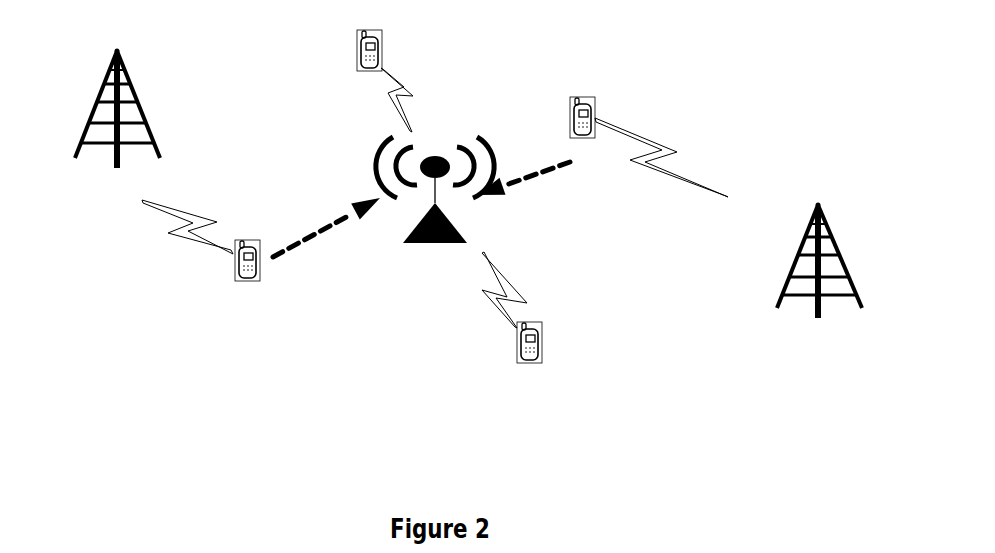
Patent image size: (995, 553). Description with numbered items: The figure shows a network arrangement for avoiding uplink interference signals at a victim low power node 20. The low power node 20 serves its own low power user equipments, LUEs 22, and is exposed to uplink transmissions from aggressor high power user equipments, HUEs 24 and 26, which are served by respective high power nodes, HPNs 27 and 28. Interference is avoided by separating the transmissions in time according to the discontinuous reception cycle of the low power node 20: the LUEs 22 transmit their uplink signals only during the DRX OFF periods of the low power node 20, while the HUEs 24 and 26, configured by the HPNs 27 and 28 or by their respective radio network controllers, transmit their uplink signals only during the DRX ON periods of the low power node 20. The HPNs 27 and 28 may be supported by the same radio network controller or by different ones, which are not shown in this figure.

The low power node (LPN) 20 is at (417, 290).
The LUEs (low power user equipments) 22 is at (378, 43).
The aggressor HUE 24 is at (237, 257).
The aggressor HUE 26 is at (595, 95).
The HPN (high power node) 27 is at (158, 138).
The HPN (high power node) 28 is at (782, 285).